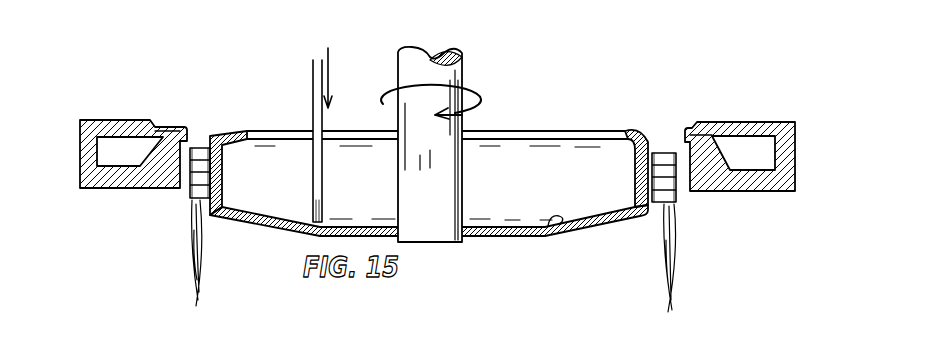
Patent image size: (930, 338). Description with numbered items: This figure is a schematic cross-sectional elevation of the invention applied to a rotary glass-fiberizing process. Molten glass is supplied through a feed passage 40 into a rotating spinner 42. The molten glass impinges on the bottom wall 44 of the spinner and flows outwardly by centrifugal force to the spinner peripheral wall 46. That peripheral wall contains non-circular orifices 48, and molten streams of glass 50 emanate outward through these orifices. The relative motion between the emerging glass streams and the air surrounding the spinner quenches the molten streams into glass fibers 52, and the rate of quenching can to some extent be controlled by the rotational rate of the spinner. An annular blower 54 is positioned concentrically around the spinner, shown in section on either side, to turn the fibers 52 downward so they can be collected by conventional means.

The feed tube 40 is at (313, 62).
The rotating spinner 42 is at (500, 128).
The bottom wall 44 is at (478, 240).
The spinner peripheral wall 46 is at (656, 212).
The non-circular orifices 48 is at (224, 178).
The molten streams of glass 50 is at (207, 147).
The glass fibers 52 is at (190, 256).
The blower 54 is at (764, 122).